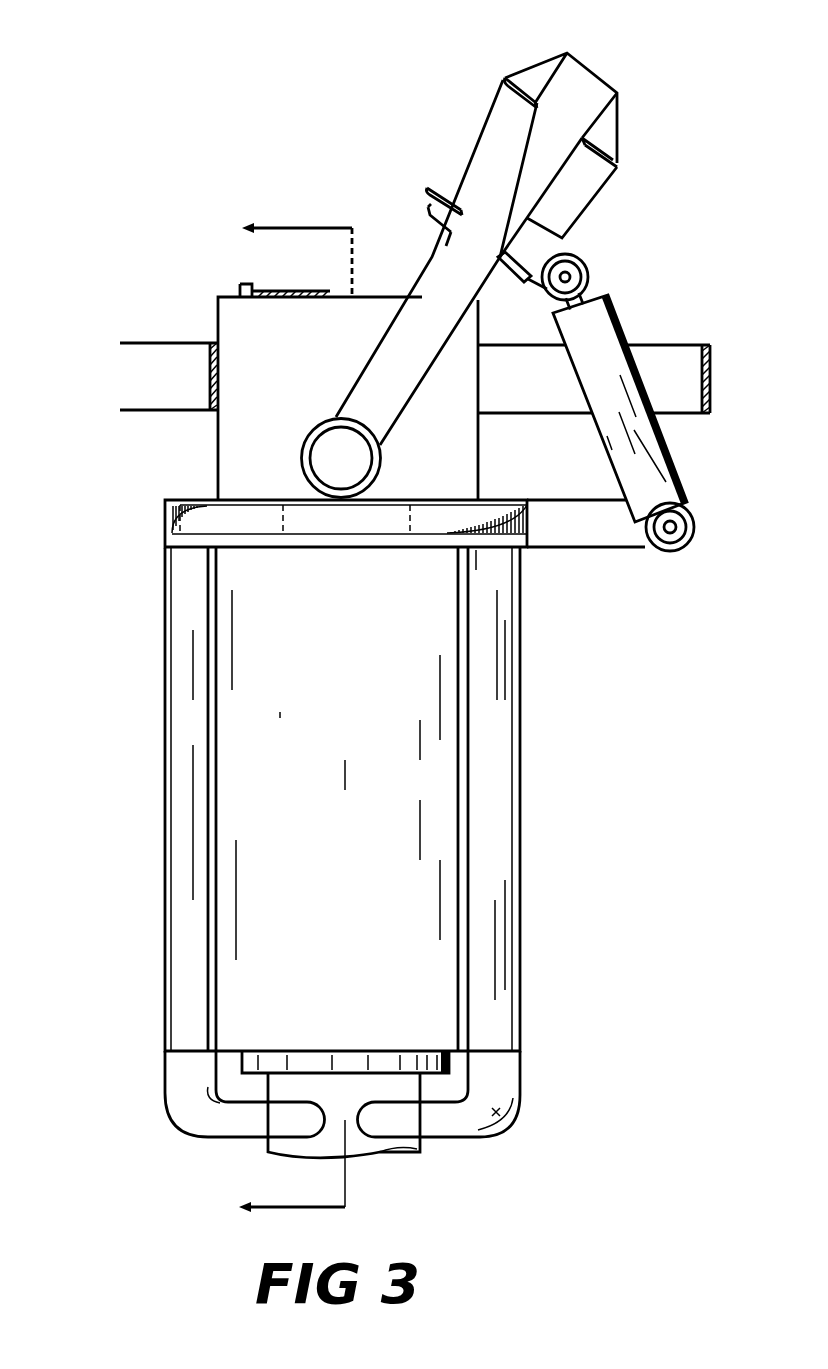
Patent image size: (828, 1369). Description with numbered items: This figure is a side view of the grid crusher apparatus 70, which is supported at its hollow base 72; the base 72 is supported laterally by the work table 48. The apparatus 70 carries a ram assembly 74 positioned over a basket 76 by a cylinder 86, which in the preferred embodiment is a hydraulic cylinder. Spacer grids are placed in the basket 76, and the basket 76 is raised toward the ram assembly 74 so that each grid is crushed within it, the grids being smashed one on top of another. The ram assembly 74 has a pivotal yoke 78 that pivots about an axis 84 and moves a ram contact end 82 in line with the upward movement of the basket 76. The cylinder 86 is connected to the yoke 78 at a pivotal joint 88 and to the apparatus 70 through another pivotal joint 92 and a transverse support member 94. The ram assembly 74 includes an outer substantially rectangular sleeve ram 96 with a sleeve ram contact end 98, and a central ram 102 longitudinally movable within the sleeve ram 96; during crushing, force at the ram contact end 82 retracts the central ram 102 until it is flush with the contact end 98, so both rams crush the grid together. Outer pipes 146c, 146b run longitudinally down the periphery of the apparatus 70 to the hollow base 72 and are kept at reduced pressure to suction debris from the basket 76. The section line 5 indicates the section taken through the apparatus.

The grid crusher apparatus 70 is at (146, 156).
The ram assembly 74 is at (491, 311).
The outer substantially rectangular sleeve ram 96 is at (478, 146).
The central ram 102 is at (428, 188).
The sleeve ram contact end 98 is at (430, 200).
The ram contact end 82 is at (437, 237).
The basket 76 is at (330, 290).
The pivotal yoke 78 is at (366, 392).
The axis 84 is at (325, 466).
The pivotal joint 88 is at (586, 280).
The cylinder 86 is at (600, 323).
The pivotal joint 92 is at (680, 550).
The transverse support member 94 is at (572, 548).
The work table 48 is at (175, 408).
The outer pipe 146c is at (183, 1003).
The outer pipe 146b is at (498, 993).
The base 72 is at (297, 1153).
The section line 5- 5 is at (281, 718).